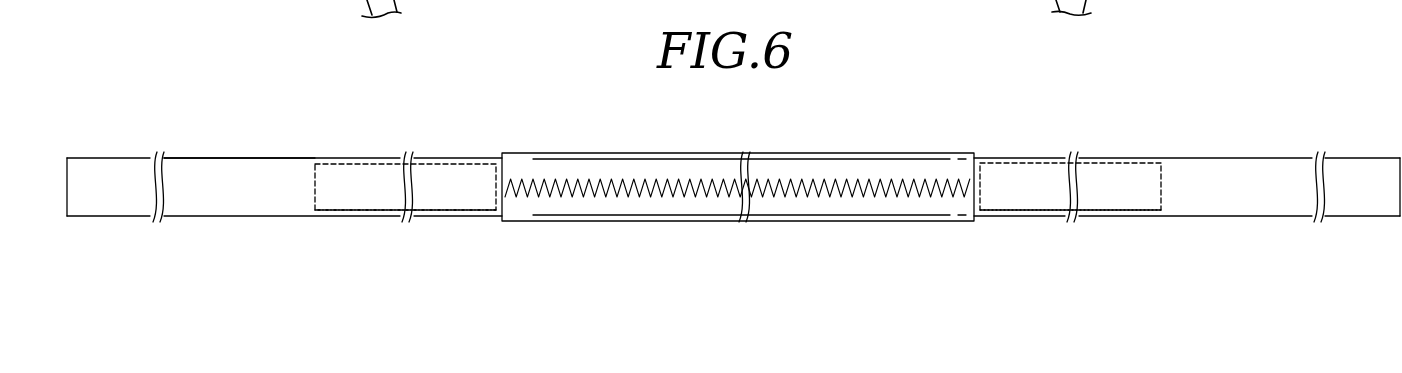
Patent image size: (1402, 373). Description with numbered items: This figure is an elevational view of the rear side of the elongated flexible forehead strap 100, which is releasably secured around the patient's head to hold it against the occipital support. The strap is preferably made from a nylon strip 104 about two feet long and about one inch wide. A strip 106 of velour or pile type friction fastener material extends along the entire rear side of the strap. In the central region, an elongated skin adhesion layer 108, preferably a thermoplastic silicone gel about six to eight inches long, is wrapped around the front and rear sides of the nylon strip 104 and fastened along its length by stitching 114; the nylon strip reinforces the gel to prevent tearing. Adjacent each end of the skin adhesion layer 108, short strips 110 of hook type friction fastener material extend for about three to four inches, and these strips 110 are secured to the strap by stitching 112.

The forehead strap 100 is at (1183, 176).
The nylon strip 104 is at (215, 203).
The strip of friction fastener material 106 is at (181, 170).
The skin adhesion layer 108 is at (627, 207).
The short strips of friction fastener material 110 is at (430, 199).
The stitching 112 is at (340, 163).
The stitching 114 is at (510, 181).